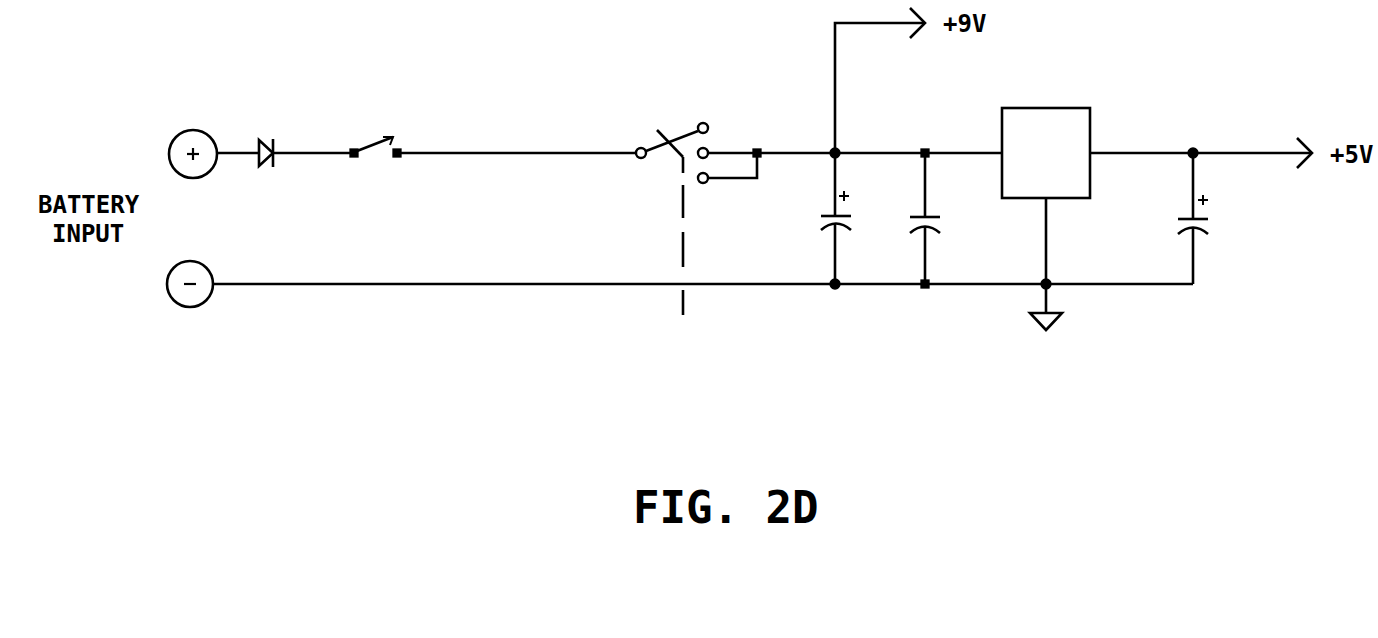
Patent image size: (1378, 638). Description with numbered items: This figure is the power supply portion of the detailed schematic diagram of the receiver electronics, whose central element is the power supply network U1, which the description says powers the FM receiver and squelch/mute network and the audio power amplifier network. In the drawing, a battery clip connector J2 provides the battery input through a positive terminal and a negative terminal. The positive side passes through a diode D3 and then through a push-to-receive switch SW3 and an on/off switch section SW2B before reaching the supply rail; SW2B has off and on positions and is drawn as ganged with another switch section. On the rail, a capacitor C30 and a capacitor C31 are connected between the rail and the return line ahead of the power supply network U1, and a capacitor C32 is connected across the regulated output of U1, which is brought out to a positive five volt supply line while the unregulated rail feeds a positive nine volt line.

The battery clip connector J2 is at (198, 264).
The diode 1N5818 D3 is at (275, 152).
The push-to-receive switch SW3 is at (385, 149).
The on/off switch section SW2B is at (689, 210).
The capacitor 220uF C30 is at (824, 218).
The capacitor 0.1 C31 is at (950, 218).
The power supply network U1 is at (1040, 199).
The capacitor 10uF C32 is at (1189, 216).